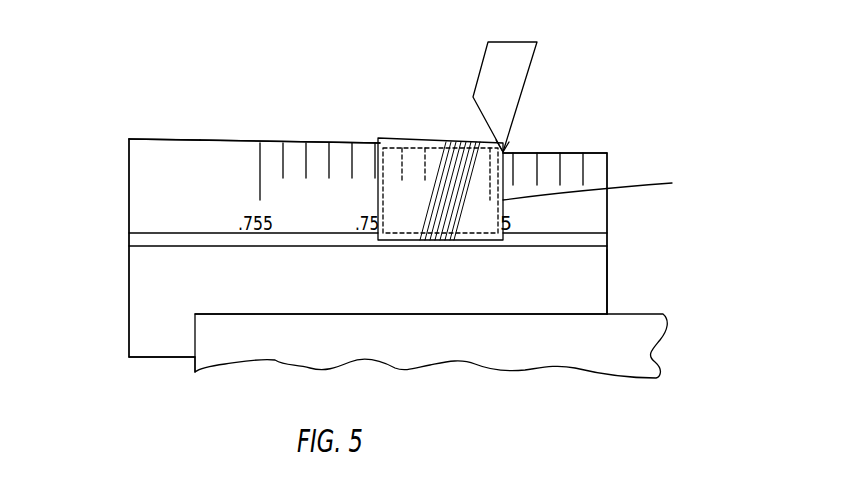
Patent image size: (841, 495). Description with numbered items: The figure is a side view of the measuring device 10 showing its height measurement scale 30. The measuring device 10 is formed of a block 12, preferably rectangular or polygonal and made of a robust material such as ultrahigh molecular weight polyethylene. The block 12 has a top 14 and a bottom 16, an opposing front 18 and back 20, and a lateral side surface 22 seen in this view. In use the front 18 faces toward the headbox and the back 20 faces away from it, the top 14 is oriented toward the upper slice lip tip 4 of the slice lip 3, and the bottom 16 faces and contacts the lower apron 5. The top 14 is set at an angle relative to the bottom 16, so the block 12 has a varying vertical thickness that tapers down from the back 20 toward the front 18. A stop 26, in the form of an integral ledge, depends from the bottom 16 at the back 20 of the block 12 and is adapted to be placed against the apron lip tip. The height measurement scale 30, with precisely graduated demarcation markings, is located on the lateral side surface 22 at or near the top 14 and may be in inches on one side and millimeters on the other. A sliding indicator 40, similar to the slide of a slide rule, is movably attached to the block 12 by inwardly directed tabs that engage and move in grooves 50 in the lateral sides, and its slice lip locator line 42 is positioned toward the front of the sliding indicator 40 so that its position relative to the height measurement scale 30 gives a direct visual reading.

The cutting tool 3 is at (527, 84).
The upper slice lip tip 4 is at (505, 150).
The lower apron 5 is at (293, 350).
The measuring device 10 is at (122, 173).
The block 12 is at (153, 148).
The top 14 is at (202, 138).
The bottom 16 is at (443, 315).
The front 18 is at (607, 212).
The back 20 is at (129, 205).
The lateral side surface 22 is at (597, 278).
The stop 26 is at (157, 323).
The height measurement scale 30 is at (611, 168).
The sliding indicator 40 is at (425, 138).
The slice lip locator line 42 is at (601, 187).
The grooves 50 is at (168, 238).